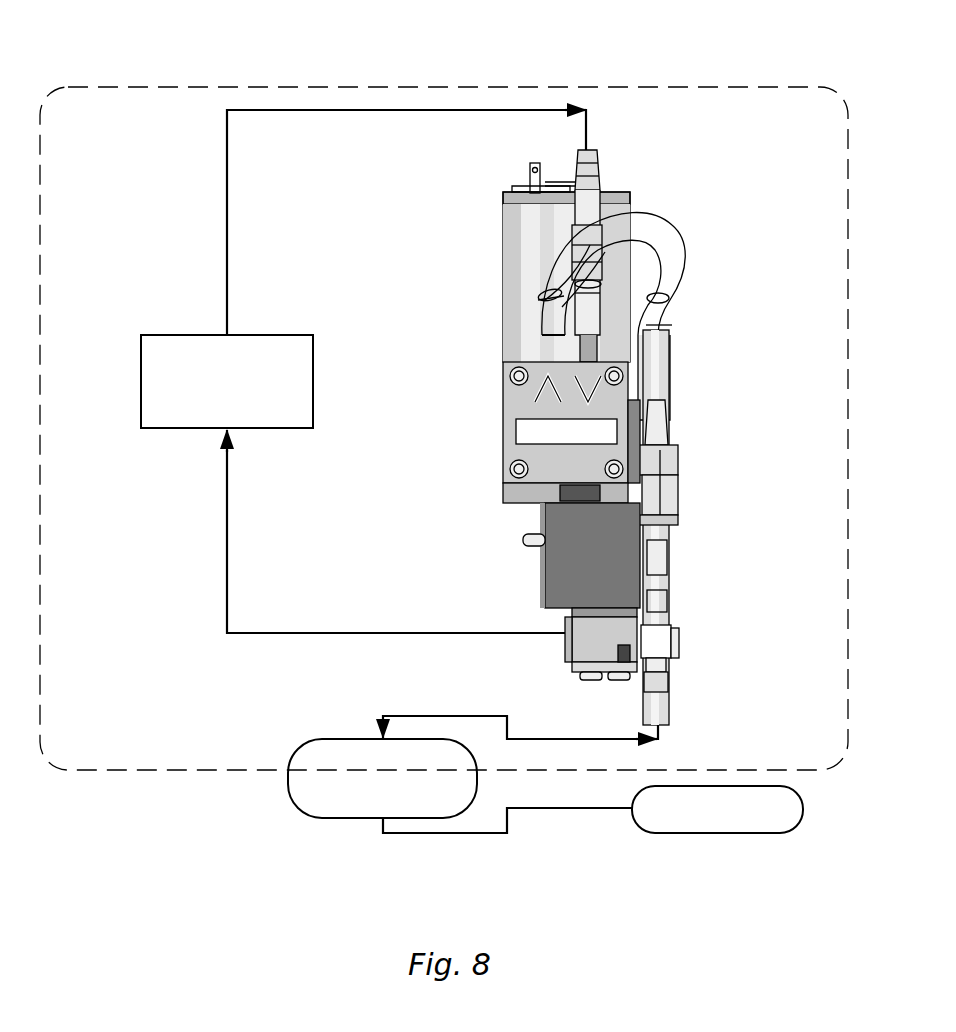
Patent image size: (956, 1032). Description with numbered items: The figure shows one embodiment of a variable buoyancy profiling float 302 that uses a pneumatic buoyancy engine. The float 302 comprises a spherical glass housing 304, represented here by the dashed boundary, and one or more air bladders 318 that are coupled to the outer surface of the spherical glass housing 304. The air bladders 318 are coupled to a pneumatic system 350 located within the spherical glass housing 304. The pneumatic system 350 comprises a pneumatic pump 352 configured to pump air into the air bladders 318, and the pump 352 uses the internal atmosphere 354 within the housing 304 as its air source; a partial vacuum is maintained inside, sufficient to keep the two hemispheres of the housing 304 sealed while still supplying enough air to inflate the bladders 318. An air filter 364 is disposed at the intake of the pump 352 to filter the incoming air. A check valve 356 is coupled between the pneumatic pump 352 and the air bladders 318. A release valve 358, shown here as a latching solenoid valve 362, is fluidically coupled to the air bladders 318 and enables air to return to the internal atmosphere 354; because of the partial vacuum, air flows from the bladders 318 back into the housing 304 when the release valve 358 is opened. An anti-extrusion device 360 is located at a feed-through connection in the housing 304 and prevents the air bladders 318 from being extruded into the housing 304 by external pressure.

The variable buoyancy profiling float 302 is at (210, 52).
The spherical glass housing 304 is at (601, 87).
The air bladders 318 is at (706, 834).
The pneumatic system 350 is at (732, 143).
The pneumatic pump 352 is at (617, 192).
The internal atmosphere 354 is at (180, 335).
The check valve 356 is at (680, 455).
The release valve 358 is at (578, 645).
The anti-extrusion device 360 is at (318, 739).
The latching solenoid valve 362 is at (553, 570).
The air filter 364 is at (602, 148).